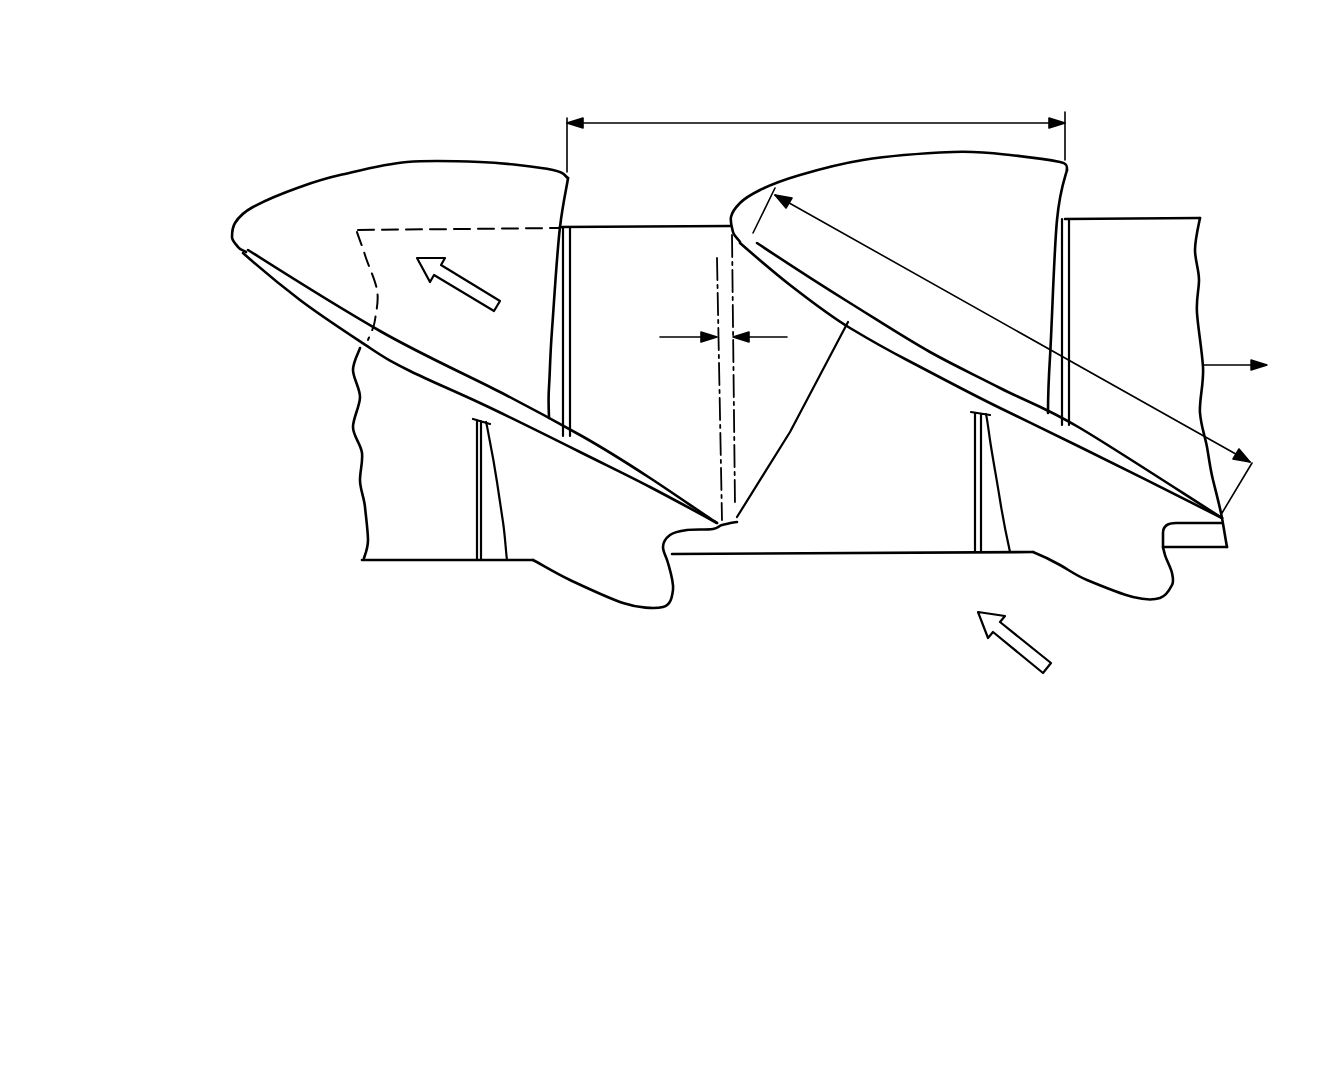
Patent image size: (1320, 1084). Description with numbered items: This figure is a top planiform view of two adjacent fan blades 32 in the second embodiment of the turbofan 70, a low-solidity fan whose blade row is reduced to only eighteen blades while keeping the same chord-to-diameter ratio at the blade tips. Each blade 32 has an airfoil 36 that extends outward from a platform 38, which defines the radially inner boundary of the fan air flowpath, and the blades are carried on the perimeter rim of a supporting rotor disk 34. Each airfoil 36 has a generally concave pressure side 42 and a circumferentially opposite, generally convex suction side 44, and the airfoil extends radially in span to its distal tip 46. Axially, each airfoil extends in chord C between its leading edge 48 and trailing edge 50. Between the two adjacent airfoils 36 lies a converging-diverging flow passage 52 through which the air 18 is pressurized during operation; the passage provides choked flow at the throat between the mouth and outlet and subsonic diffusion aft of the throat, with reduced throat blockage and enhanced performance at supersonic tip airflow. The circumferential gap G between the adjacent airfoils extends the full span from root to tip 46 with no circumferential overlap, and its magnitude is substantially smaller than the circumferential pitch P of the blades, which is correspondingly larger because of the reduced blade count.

The air 18 is at (1040, 640).
The fan rotor blades 32 is at (462, 314).
The rotor disk 34 is at (1205, 278).
The airfoil 36 is at (548, 453).
The platform 38 is at (570, 262).
The pressure side 42 is at (997, 253).
The suction side 44 is at (978, 408).
The tip 46 is at (345, 328).
The leading edge 48 is at (645, 610).
The trailing edge 50 is at (410, 162).
The flow passages 52 is at (790, 432).
The turbofan 70 is at (220, 486).
The circumferential pitch P is at (916, 120).
The chord C is at (868, 245).
The circumferential gap G is at (678, 343).